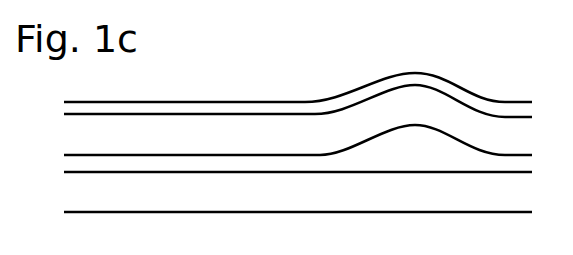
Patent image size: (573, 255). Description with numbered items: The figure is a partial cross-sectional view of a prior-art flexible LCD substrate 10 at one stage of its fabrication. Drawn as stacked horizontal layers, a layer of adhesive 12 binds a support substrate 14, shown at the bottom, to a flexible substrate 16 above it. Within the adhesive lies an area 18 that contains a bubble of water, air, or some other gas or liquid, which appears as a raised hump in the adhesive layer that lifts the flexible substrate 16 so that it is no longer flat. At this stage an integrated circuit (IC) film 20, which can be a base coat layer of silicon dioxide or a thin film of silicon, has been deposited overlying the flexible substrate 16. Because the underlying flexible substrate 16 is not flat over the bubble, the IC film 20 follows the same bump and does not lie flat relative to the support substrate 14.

The flexible LCD substrate 10 is at (299, 147).
The layer of adhesive 12 is at (192, 165).
The support substrate 14 is at (313, 204).
The flexible substrate 16 is at (298, 188).
The area in the adhesive containing a bubble 18 is at (422, 140).
The integrated circuit (IC) film 20 is at (265, 108).